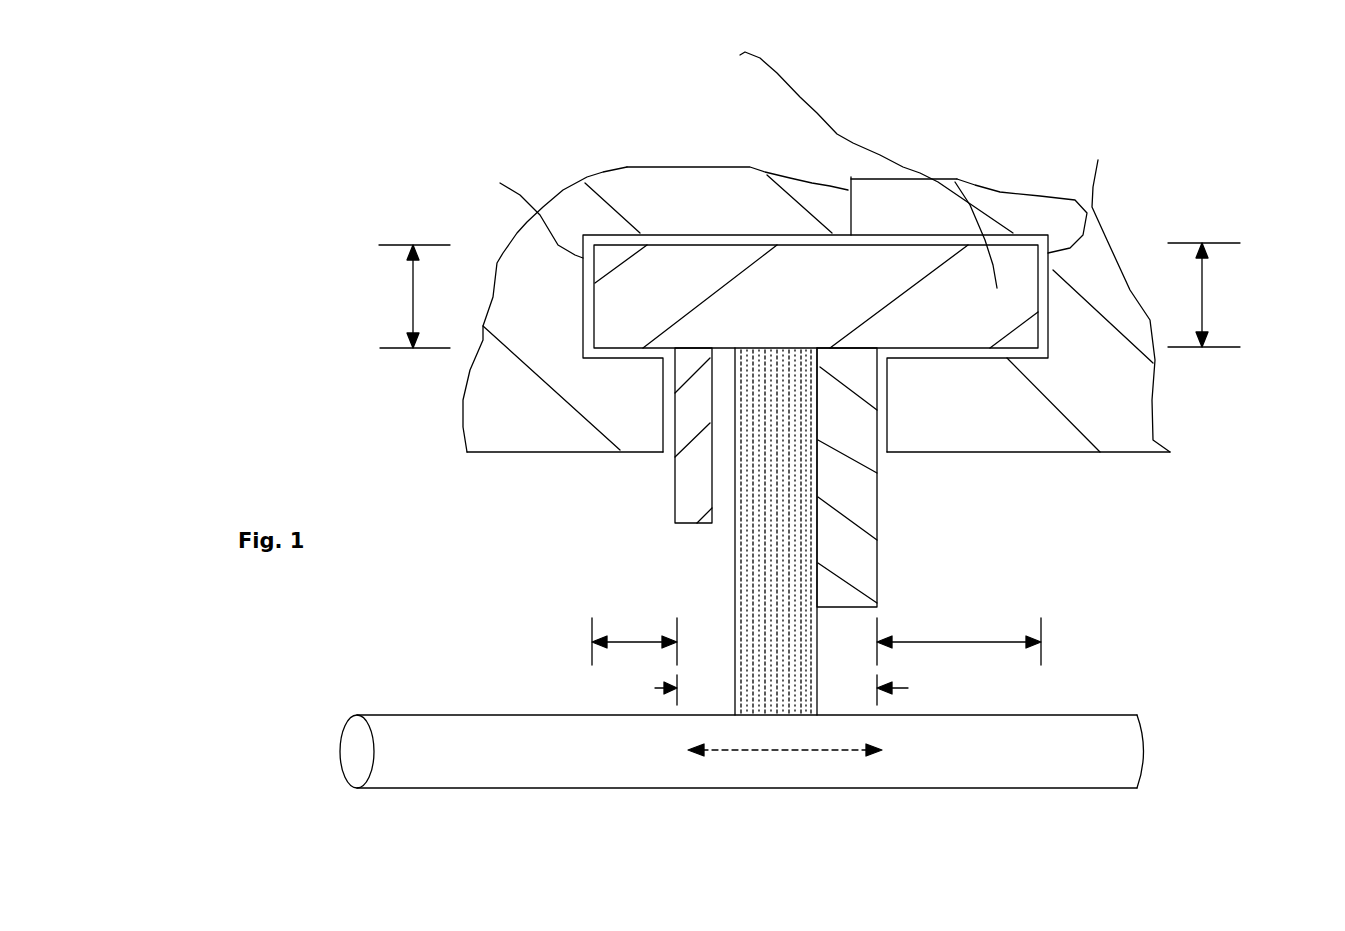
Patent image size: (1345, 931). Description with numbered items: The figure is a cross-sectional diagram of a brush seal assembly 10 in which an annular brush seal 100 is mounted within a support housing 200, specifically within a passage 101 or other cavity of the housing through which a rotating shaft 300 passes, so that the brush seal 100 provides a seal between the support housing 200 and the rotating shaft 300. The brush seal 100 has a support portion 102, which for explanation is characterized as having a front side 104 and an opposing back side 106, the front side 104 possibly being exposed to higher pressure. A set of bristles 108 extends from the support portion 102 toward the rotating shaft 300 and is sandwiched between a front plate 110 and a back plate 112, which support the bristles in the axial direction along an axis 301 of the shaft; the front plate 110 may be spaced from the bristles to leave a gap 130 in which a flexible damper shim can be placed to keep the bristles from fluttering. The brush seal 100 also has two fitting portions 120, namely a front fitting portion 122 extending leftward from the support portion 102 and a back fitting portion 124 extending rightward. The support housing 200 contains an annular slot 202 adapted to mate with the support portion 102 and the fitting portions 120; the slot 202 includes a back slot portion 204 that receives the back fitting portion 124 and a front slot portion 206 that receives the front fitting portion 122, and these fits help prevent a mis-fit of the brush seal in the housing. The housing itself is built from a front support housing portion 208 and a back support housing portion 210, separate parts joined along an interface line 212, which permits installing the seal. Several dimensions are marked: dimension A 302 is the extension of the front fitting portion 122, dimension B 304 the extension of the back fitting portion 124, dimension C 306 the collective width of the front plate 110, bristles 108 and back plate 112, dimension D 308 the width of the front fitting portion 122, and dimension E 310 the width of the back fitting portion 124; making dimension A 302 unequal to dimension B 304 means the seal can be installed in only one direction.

The brush seal assembly 10 is at (1143, 578).
The brush seal 100 is at (890, 496).
The passage 101 is at (518, 523).
The support portion 102 is at (770, 285).
The front side 104 is at (756, 315).
The back side 106 is at (836, 313).
The set of bristles 108 is at (735, 573).
The front plate 110 is at (676, 460).
The back plate 112 is at (878, 548).
The fitting portions 120 is at (633, 284).
The front fitting portion 122 is at (583, 258).
The back fitting portion 124 is at (1092, 207).
The gap 130 is at (714, 465).
The support housing 200 is at (1095, 452).
The slot 202 is at (997, 372).
The back slot portion 204 is at (1048, 283).
The front slot portion 206 is at (583, 278).
The front support housing portion 208 is at (622, 167).
The back support housing portion 210 is at (1020, 192).
The interface line 212 is at (847, 182).
The rotating shaft 300 is at (483, 790).
The axis 301 is at (745, 753).
The dimension A 302 is at (625, 640).
The dimension B 304 is at (925, 642).
The dimension C 306 is at (905, 683).
The dimension D 308 is at (410, 270).
The dimension E 310 is at (1202, 278).